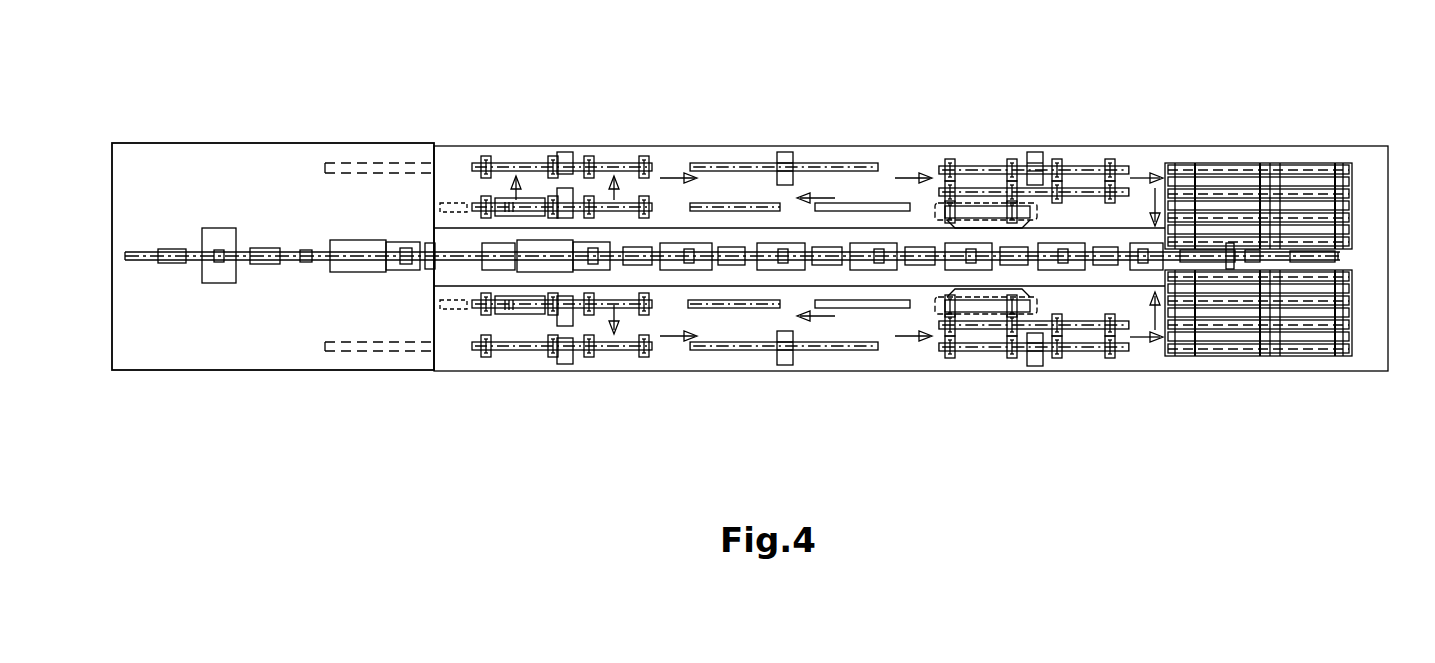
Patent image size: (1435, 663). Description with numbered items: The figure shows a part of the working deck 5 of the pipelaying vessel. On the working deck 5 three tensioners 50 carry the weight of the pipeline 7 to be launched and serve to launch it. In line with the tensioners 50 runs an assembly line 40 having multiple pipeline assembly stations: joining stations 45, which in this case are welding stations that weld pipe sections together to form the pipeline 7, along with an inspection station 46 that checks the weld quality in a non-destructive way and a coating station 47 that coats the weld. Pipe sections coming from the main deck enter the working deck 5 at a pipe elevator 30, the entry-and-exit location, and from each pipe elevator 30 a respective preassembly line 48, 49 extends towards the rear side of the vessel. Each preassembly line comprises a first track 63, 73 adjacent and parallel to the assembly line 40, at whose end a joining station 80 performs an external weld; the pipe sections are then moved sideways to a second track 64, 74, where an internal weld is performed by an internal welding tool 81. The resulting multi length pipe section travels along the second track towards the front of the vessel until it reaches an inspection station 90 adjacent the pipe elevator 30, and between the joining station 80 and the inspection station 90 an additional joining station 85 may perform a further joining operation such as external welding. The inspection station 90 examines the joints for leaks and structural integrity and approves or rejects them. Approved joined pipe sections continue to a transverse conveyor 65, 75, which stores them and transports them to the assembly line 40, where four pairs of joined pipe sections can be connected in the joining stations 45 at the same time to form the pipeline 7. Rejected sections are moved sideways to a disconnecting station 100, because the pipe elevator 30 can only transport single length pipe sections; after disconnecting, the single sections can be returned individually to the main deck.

The working deck 5 is at (1378, 198).
The pipeline 7 is at (176, 265).
The pipe elevator 30 is at (1026, 208).
The assembly line 40 is at (1358, 258).
The joining station 45 is at (605, 246).
The inspection station 46 is at (397, 247).
The coating station 47 is at (218, 238).
The preassembly line 48 is at (801, 248).
The preassembly line 49 is at (801, 381).
The tensioner 50 is at (360, 268).
The first track 63 is at (790, 206).
The second track 64 is at (668, 165).
The transverse conveyor 65 is at (1259, 168).
The first track 73 is at (790, 308).
The second track 74 is at (668, 352).
The transverse conveyor 75 is at (1264, 358).
The joining station 80 is at (558, 118).
The internal welding tool 81 is at (343, 172).
The additional joining station 85 is at (785, 151).
The inspection station 90 is at (1036, 152).
The disconnecting station 100 is at (1072, 180).